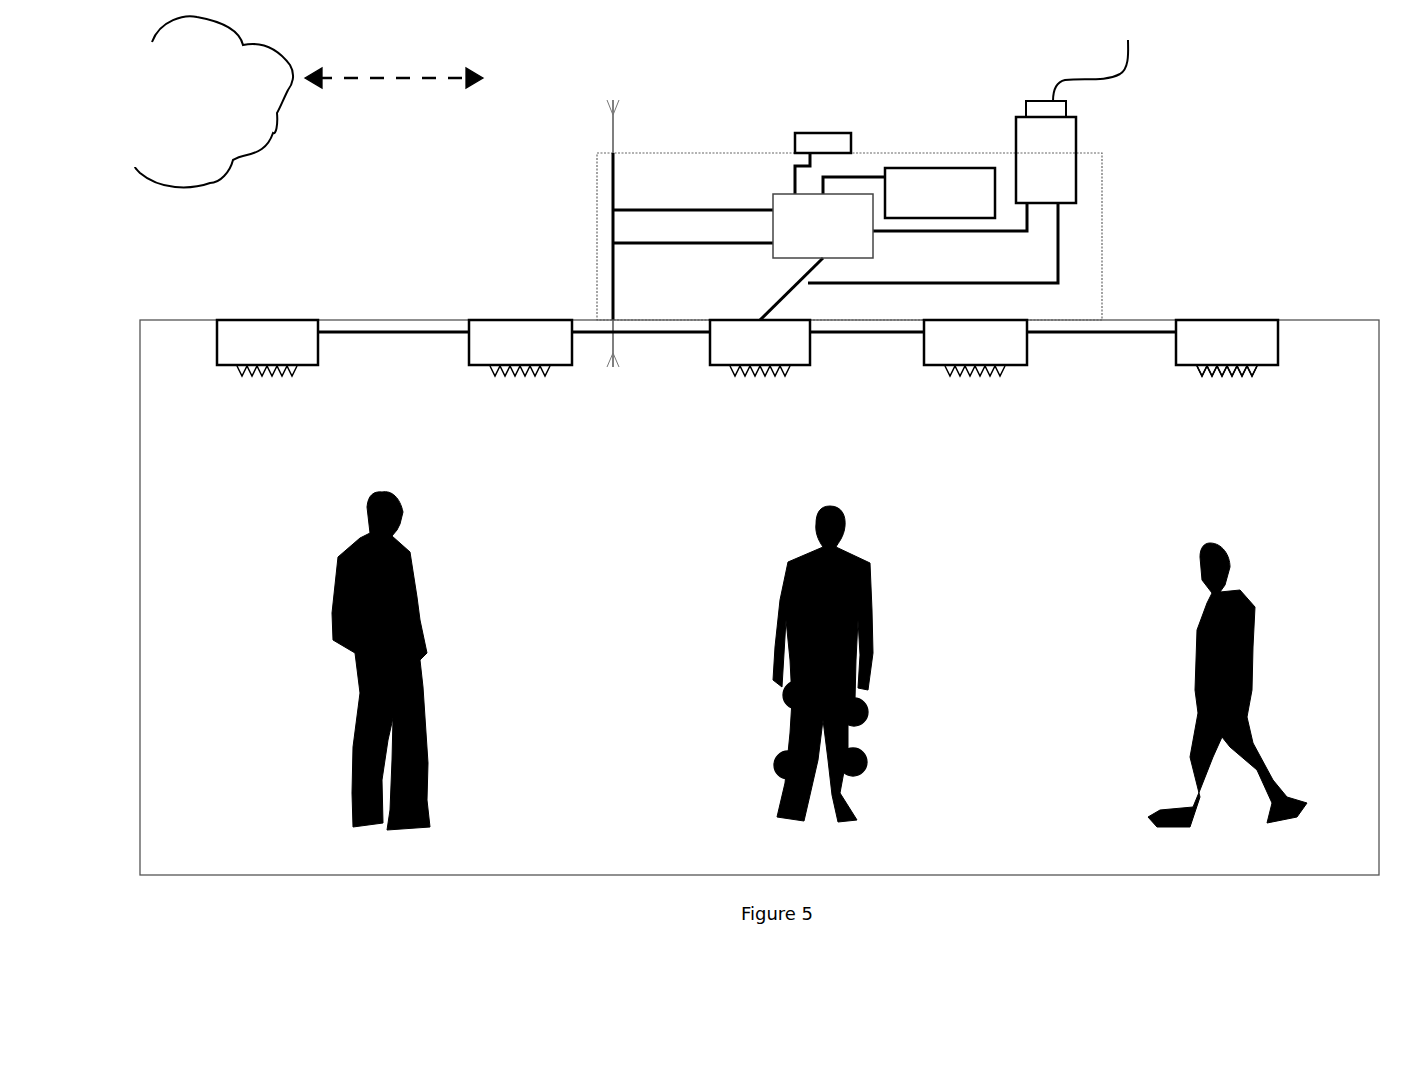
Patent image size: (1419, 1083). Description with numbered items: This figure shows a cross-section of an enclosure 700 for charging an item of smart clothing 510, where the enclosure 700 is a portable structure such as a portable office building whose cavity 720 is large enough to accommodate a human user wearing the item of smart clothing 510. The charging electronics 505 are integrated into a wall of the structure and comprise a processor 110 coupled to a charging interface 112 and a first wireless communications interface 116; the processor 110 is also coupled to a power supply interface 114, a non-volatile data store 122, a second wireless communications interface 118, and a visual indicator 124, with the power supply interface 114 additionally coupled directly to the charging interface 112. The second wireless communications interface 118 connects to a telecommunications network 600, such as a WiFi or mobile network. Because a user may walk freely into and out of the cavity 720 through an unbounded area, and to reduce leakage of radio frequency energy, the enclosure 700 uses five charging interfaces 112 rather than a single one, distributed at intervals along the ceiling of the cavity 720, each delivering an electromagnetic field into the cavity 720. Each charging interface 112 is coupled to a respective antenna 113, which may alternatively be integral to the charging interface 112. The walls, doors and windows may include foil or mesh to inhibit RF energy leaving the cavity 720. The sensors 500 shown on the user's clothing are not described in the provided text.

The telecommunications network 600 is at (214, 101).
The second wireless communications interface 118 is at (562, 188).
The charging electronics 505 is at (597, 237).
The visual indicator 124 is at (826, 133).
The processor 110 is at (823, 226).
The non-volatile data store 122 is at (940, 193).
The power supply interface 114 is at (1177, 193).
The enclosure 700 is at (718, 553).
The charging interface 112 is at (520, 320).
The first wireless communications interface 116 is at (613, 408).
The antenna 113 is at (1253, 367).
The cavity 720 is at (146, 725).
The item of smart clothing 510 is at (347, 778).
The Sensors 500 is at (862, 702).